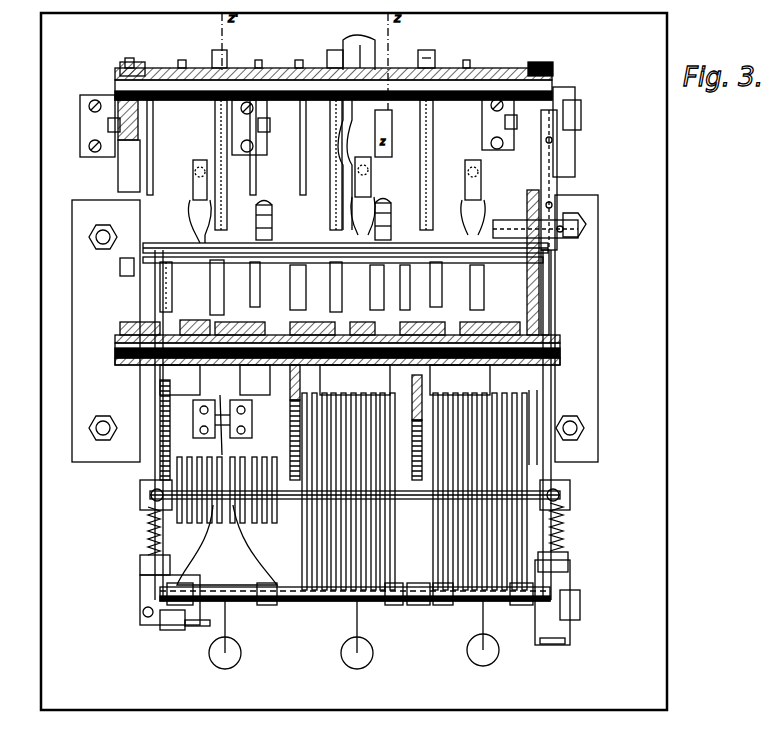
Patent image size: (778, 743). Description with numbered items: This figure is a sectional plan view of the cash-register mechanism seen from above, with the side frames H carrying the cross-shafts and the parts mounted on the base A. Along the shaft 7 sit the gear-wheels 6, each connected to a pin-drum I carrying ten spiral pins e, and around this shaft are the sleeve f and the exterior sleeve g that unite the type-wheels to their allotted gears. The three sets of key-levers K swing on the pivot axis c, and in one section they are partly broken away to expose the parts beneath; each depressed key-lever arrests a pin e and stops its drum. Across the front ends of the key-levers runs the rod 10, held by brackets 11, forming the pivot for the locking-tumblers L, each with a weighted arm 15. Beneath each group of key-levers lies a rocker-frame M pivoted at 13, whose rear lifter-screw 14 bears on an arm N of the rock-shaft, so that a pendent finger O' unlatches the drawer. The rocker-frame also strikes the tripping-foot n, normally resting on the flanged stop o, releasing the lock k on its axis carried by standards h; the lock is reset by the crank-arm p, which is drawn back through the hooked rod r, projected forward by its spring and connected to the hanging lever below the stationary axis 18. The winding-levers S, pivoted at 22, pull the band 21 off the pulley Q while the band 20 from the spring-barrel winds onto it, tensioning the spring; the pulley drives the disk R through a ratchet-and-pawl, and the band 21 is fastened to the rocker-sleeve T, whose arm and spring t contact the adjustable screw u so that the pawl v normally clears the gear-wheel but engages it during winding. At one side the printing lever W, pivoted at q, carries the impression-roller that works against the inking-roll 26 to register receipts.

The pivot of winding-levers 22 is at (182, 74).
The side frames H is at (124, 68).
The cord or band 21 is at (228, 180).
The top board or base A is at (286, 37).
The pendent finger O' is at (401, 117).
The stationary axis 18 is at (298, 126).
The winding-levers S is at (450, 136).
The hooked rod r is at (150, 182).
The lifter-screw 14 is at (378, 170).
The rocker-frame M is at (192, 178).
The arm N is at (194, 204).
The adjustable screw u is at (274, 214).
The flanged stop o is at (363, 441).
The arm and spring t is at (392, 242).
The lever W is at (566, 132).
The pivot of lever W q is at (580, 232).
The inking-roll 26 is at (548, 282).
The pawl v is at (172, 298).
The rocker-sleeve T is at (266, 287).
The cord or band 20 is at (378, 278).
The pulley Q is at (208, 326).
The shaft 7 is at (576, 338).
The sleeve f is at (330, 310).
The exterior sleeve g is at (376, 310).
The pin-drum I is at (325, 380).
The gear-wheel 6 is at (290, 425).
The disk R is at (345, 427).
The pivot of rocker-frame 13 is at (222, 419).
The pin e is at (196, 398).
The key-levers K is at (252, 458).
The pivot pin or axis c is at (148, 484).
The brackets 11 is at (175, 566).
The locking-tumblers L is at (243, 640).
The weighted arm 15 is at (354, 635).
The rod 10 is at (240, 606).
The tripping-foot n is at (510, 614).
The crank-arm p is at (160, 640).
The standards h is at (178, 640).
The lock k is at (512, 645).